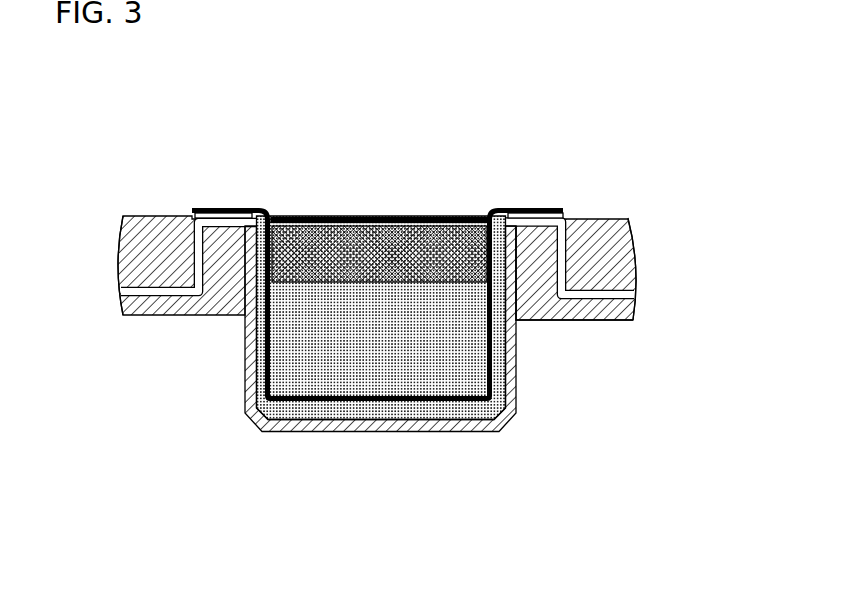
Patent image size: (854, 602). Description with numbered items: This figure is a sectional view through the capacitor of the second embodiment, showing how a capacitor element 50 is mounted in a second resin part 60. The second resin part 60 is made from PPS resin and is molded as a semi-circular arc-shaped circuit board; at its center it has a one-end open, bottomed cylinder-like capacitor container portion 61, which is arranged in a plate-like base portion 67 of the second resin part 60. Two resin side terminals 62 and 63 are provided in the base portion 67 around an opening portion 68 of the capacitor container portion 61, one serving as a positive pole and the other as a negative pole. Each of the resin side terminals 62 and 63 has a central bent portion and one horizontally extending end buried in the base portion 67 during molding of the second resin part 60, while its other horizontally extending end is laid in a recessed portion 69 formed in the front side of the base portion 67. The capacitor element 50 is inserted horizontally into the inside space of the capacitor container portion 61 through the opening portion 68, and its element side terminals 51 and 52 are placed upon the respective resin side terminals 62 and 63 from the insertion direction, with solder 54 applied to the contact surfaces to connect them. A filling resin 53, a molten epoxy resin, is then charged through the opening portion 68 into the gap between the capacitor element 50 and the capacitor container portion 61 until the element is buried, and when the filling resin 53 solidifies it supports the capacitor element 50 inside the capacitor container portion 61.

The capacitor element 50 is at (423, 365).
The element side terminal 51 is at (538, 208).
The element side terminal 52 is at (217, 207).
The filling resin 53 is at (385, 226).
The solder 54 is at (190, 215).
The second resin part 60 is at (617, 266).
The capacitor container portion 61 is at (512, 412).
The resin side terminal 62 is at (605, 322).
The resin side terminal 63 is at (143, 292).
The base portion 67 is at (637, 257).
The opening portion 68 is at (320, 217).
The recessed portion 69 is at (224, 232).